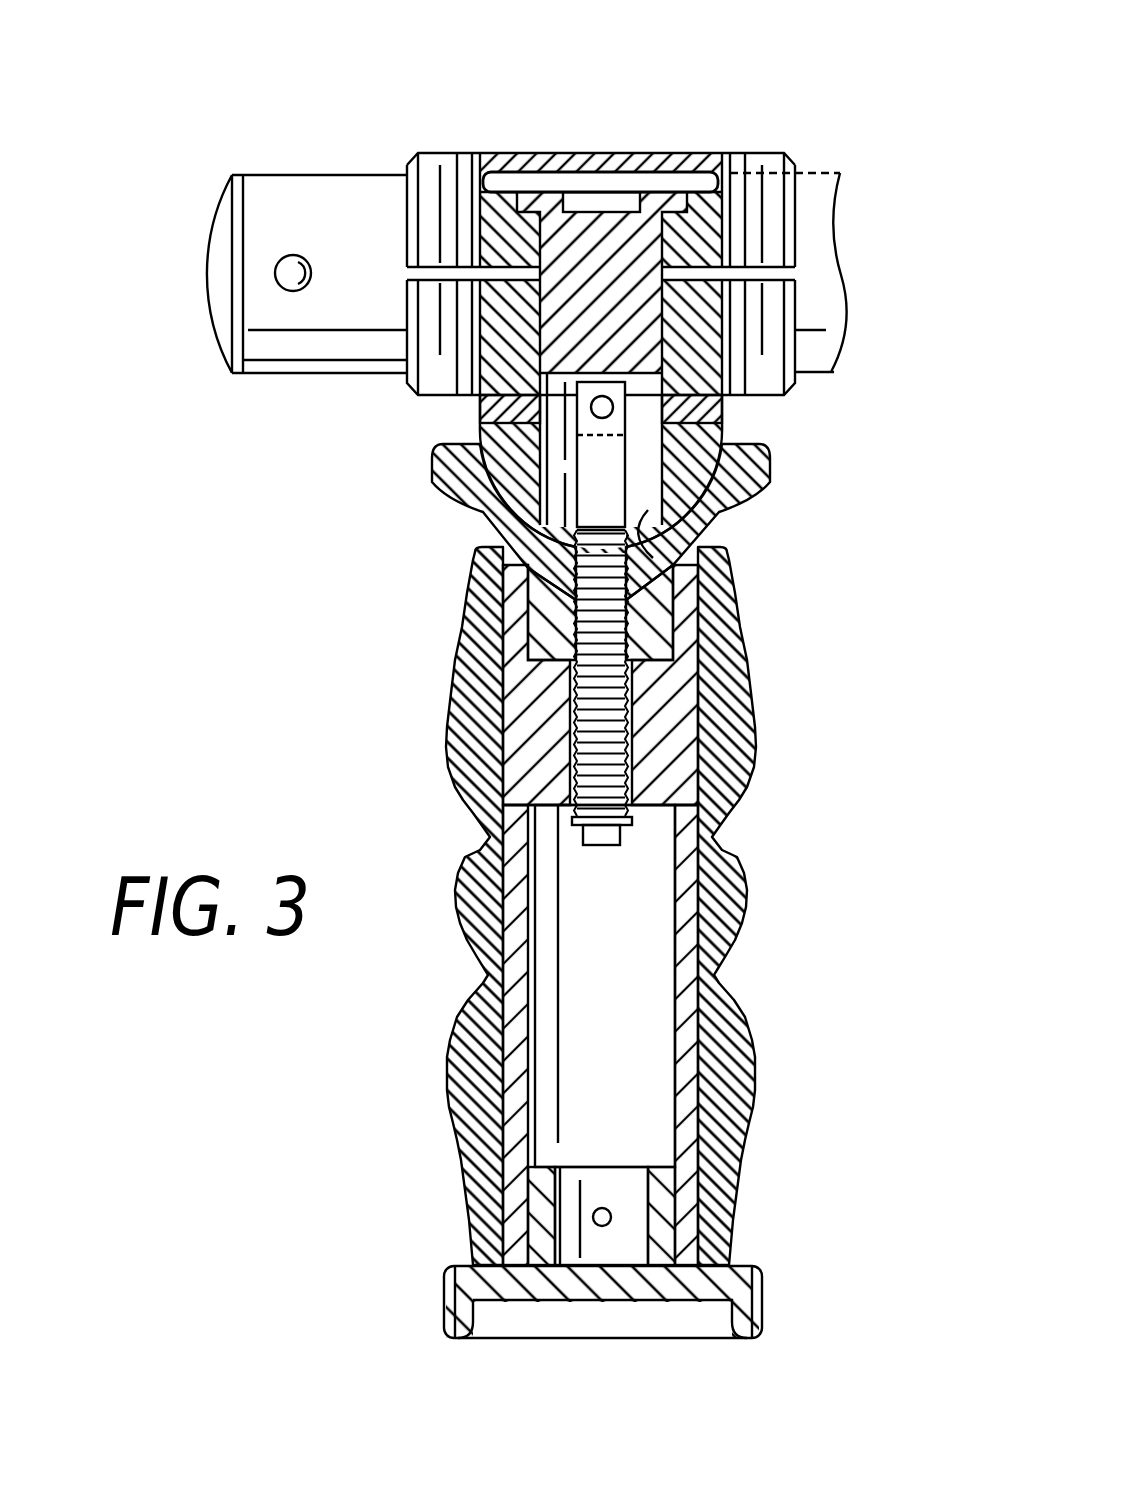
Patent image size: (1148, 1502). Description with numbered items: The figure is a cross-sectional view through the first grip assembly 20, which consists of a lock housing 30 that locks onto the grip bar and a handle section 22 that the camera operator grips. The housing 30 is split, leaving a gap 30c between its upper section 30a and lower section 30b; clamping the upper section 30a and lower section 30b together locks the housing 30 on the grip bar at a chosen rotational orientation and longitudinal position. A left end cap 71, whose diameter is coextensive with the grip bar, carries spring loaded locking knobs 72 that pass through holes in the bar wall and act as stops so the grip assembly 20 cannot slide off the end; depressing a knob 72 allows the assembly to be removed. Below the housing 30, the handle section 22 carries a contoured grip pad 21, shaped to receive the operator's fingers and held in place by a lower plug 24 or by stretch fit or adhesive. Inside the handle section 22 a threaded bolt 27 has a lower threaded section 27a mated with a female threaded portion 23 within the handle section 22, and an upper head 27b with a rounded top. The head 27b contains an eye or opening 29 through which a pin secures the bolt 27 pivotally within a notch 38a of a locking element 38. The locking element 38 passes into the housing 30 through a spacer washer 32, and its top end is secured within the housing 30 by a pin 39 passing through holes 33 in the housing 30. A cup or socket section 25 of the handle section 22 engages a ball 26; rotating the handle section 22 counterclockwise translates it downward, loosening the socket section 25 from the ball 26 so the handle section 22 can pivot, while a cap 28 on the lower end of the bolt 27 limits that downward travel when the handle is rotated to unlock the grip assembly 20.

The first grip assembly 20 is at (269, 617).
The grip pad 21 is at (745, 1033).
The handle section 22 is at (700, 968).
The threaded portion 23 is at (567, 753).
The lower plug 24 is at (752, 1287).
The socket section 25 is at (720, 513).
The ball 26 is at (498, 485).
The threaded bolt 27 is at (613, 473).
The lower threaded section 27a is at (612, 692).
The upper head 27b is at (587, 428).
The cap 28 is at (612, 850).
The eye or opening 29 is at (612, 408).
The housing 30 is at (703, 148).
The upper section 30a is at (785, 188).
The lower section 30b is at (786, 306).
The gap 30c is at (797, 273).
The spacer washer 32 is at (490, 412).
The holes 33 is at (468, 165).
The locking element 38 is at (573, 332).
The notch 38a is at (705, 582).
The pin 39 is at (598, 178).
The left end cap 71 is at (207, 278).
The spring loaded locking knobs 72 is at (295, 254).